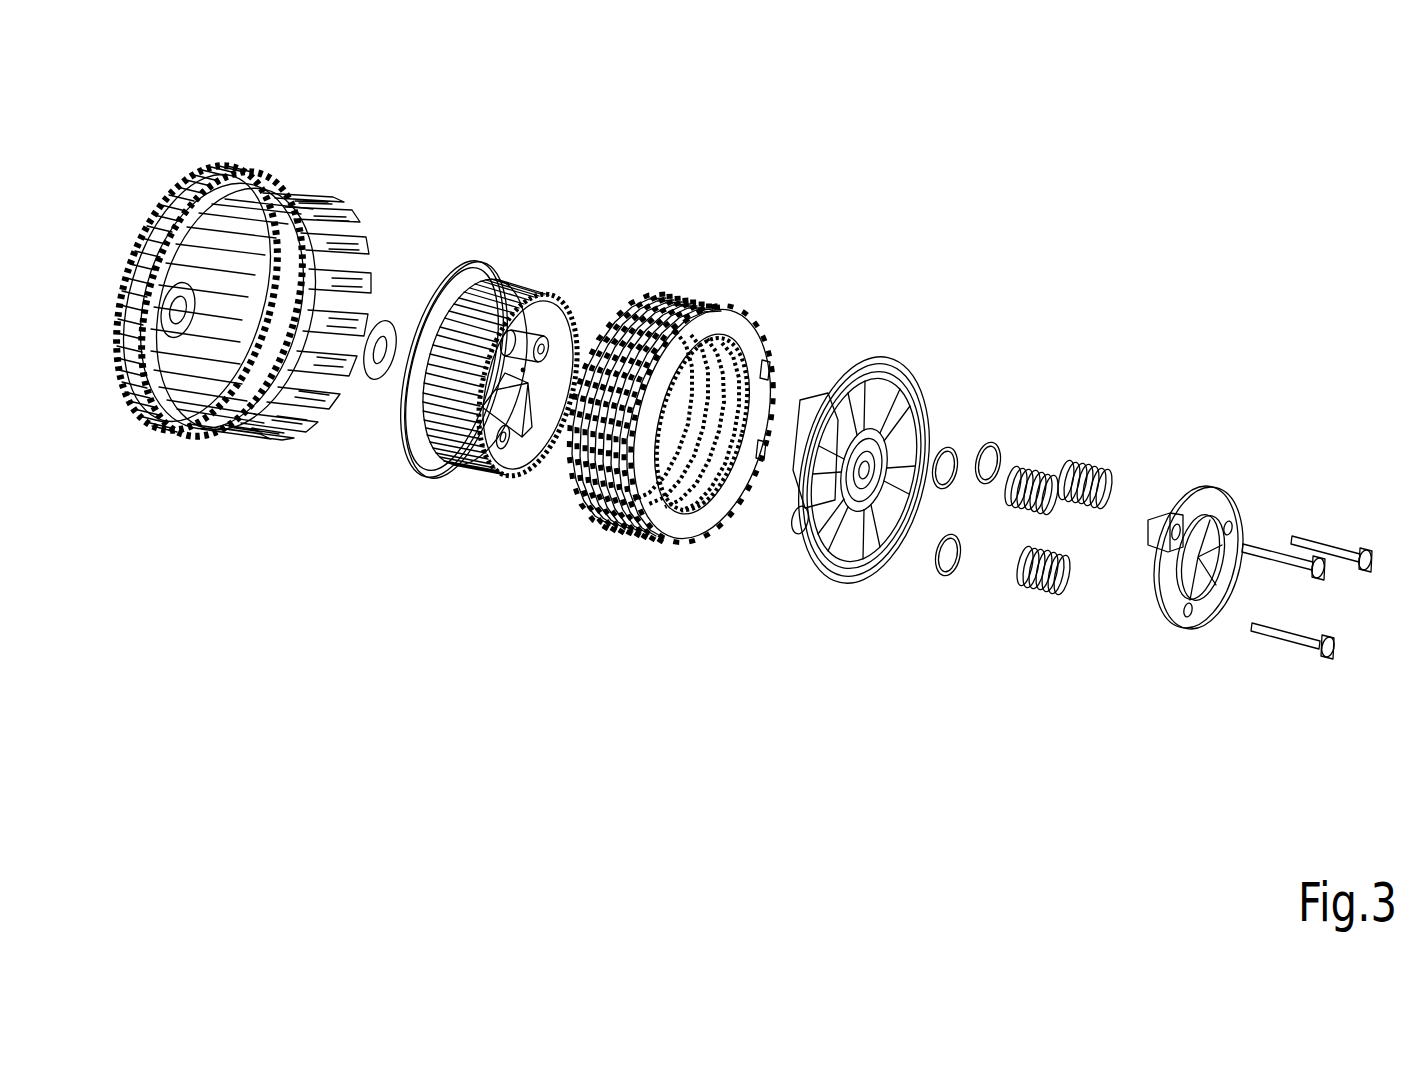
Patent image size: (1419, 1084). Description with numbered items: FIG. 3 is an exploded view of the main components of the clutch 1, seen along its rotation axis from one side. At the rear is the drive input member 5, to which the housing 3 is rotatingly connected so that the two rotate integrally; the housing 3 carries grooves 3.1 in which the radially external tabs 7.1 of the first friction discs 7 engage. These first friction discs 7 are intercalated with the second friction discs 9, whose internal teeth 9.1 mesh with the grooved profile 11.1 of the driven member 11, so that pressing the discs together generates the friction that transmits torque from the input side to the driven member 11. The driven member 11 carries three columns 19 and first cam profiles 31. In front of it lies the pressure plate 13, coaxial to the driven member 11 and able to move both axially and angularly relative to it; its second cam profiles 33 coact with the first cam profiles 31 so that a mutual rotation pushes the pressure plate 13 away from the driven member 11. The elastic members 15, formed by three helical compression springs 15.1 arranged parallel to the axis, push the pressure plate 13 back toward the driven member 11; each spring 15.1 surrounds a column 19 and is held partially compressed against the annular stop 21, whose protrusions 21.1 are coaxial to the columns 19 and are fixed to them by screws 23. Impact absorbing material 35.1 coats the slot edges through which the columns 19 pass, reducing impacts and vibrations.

The clutch 1 is at (171, 80).
The housing 3 is at (250, 187).
The grooves 3.1 is at (367, 275).
The drive input member 5 is at (167, 182).
The first friction discs 7 is at (618, 317).
The radially external tabs 7.1 is at (660, 302).
The second friction discs 9 is at (684, 395).
The internal teeth 9.1 is at (770, 398).
The driven member 11 is at (493, 414).
The grooved profile 11.1 is at (445, 445).
The pressure plate 13 is at (853, 438).
The elastic members 15 is at (1060, 492).
The helical compression springs 15.1 is at (1072, 479).
The column 19 is at (541, 349).
The stop 21 is at (1198, 581).
The protrusions 21.1 is at (1157, 520).
The screws 23 is at (1328, 550).
The first cam profile 31 is at (528, 312).
The second cam profile 33 is at (823, 385).
The impact absorbing material 35.1 is at (985, 445).